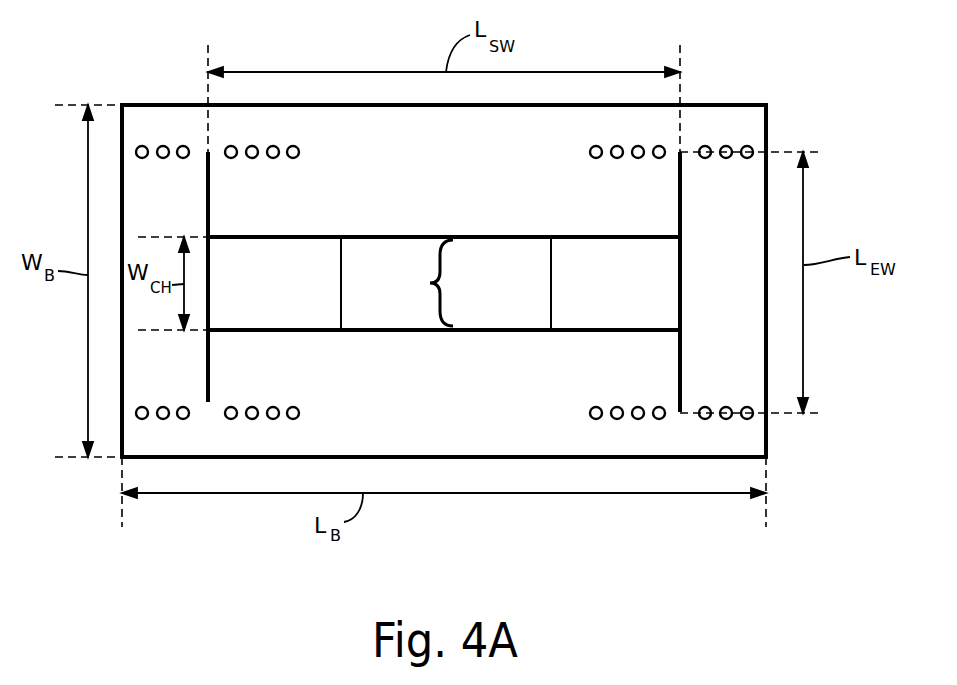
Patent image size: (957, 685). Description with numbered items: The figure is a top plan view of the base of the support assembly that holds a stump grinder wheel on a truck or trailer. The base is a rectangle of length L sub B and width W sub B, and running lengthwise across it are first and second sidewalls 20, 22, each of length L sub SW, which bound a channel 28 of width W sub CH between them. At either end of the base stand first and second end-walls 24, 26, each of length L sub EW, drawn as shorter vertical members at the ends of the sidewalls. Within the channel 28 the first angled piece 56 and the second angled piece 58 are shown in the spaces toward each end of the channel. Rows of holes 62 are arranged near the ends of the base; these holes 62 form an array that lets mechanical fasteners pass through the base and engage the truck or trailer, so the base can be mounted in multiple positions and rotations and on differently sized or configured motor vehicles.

The first sidewall 20 is at (280, 236).
The second sidewall 22 is at (291, 332).
The first end-wall 24 is at (208, 201).
The second end-wall 26 is at (680, 206).
The channel 28 is at (427, 283).
The first angled piece 56 is at (298, 283).
The second angled piece 58 is at (587, 283).
The holes 62 is at (580, 409).